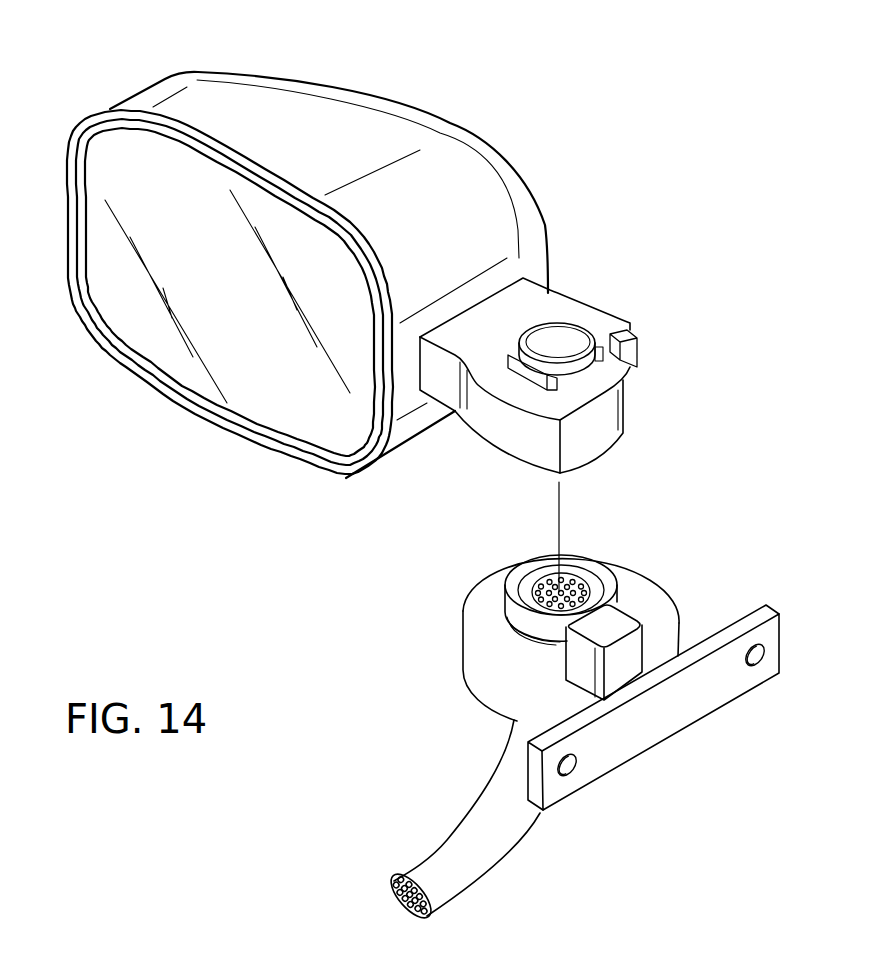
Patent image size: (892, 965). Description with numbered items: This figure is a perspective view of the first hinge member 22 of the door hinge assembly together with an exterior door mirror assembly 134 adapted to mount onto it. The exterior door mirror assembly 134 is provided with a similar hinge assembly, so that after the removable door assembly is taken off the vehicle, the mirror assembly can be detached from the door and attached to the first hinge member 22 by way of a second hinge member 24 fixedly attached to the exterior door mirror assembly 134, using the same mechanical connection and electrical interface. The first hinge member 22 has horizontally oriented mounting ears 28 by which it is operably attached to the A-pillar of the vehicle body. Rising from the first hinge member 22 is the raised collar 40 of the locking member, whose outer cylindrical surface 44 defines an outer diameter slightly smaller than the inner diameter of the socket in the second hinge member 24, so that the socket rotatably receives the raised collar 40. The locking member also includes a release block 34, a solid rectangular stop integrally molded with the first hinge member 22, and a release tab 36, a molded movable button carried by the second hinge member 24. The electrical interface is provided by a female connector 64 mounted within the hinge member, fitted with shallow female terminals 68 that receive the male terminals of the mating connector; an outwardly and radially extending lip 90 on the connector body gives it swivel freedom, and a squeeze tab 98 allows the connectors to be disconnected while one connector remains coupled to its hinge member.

The exterior door mirror assembly 134 is at (333, 117).
The squeeze tab 98 is at (603, 333).
The release tab 36 is at (639, 353).
The second hinge member 24 is at (607, 412).
The outwardly and radially extending lip 90 is at (522, 376).
The female terminals 68 is at (566, 578).
The female connector 64 is at (590, 577).
The release block 34 is at (654, 578).
The first hinge member 22 is at (673, 637).
The mounting ears 28 is at (696, 700).
The outer cylindrical surface 44 is at (517, 614).
The raised collar 40 is at (535, 625).